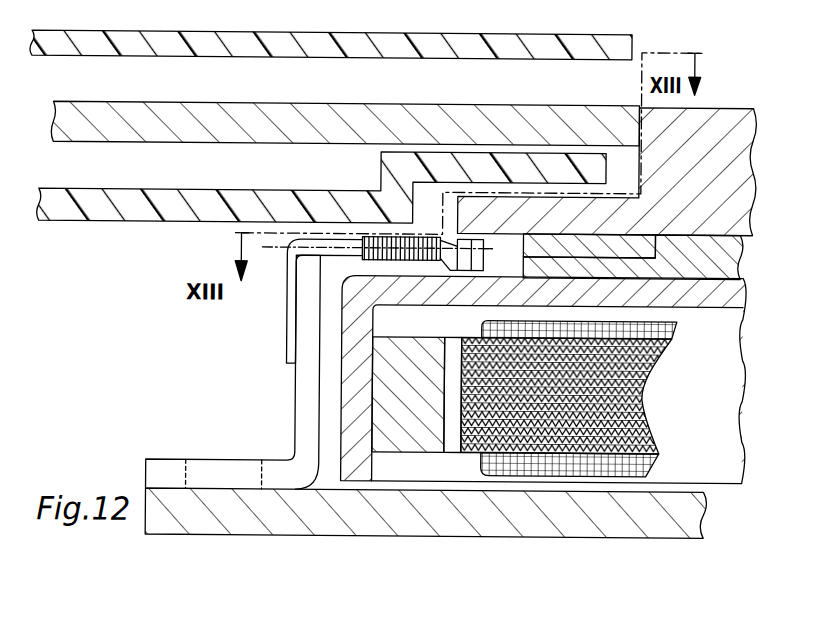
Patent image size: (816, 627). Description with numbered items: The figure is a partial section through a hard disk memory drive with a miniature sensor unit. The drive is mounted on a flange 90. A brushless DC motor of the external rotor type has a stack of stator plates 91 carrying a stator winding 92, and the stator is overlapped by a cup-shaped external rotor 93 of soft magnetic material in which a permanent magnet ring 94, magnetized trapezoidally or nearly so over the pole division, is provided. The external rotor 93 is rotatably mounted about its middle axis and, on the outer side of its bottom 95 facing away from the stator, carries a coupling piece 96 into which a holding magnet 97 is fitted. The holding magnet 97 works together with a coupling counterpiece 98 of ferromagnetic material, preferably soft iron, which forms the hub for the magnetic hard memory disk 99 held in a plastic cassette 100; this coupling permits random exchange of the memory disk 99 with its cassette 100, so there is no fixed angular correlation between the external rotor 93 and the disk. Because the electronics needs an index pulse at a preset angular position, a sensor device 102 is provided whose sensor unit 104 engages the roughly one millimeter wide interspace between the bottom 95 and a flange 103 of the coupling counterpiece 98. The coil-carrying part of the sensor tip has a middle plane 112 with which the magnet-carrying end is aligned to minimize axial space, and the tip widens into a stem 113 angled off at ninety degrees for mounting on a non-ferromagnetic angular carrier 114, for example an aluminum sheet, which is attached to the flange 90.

The flange 90 is at (402, 516).
The stack of stator plates 91 is at (650, 417).
The stator winding 92 is at (658, 464).
The external rotor 93 is at (340, 436).
The permanent magnet ring 94 is at (423, 439).
The bottom 95 is at (712, 266).
The coupling piece 96 is at (726, 243).
The holding magnet 97 is at (600, 225).
The coupling counterpiece 98 is at (722, 118).
The magnetic hard memory disk 99 is at (158, 129).
The plastic cassette 100 is at (67, 205).
The sensor device 102 is at (257, 393).
The flange of the coupling counterpiece 103 is at (557, 211).
The sensor unit 104 is at (282, 408).
The middle plane 112 is at (269, 258).
The stem 113 is at (287, 321).
The angular carrier 114 is at (170, 473).